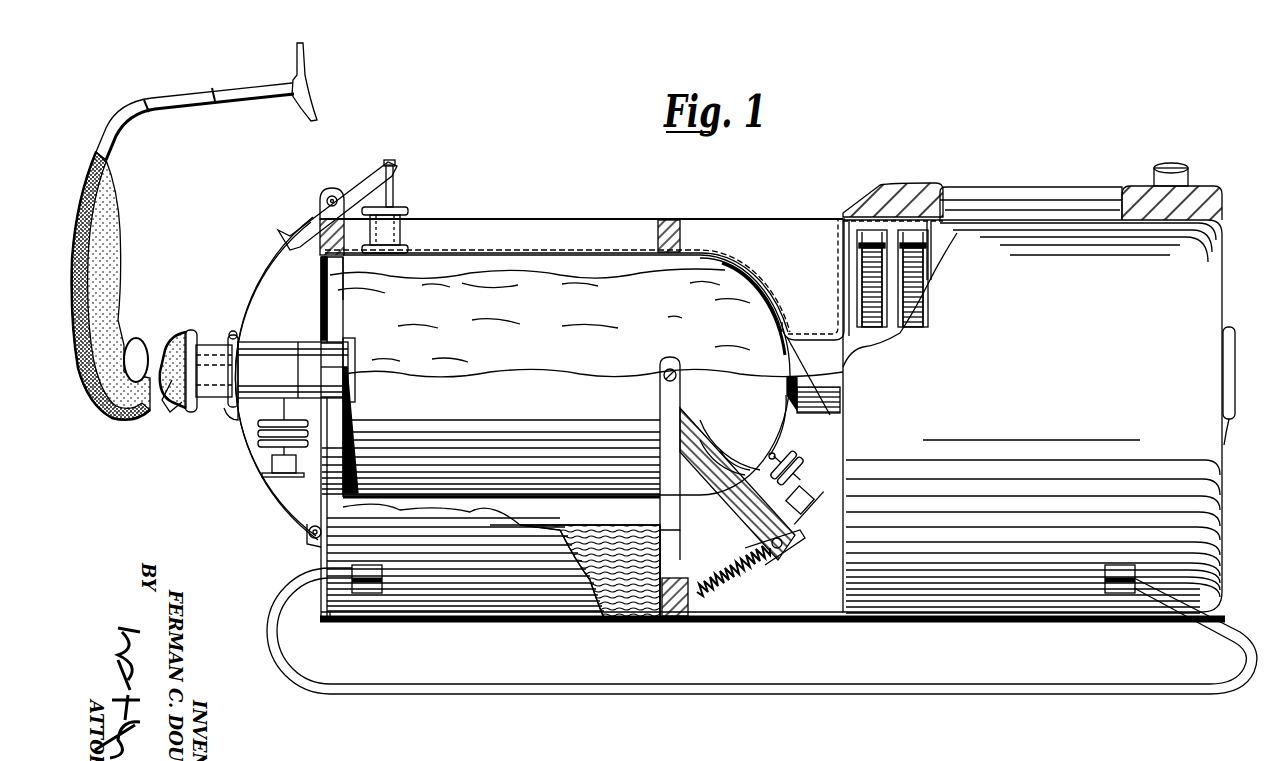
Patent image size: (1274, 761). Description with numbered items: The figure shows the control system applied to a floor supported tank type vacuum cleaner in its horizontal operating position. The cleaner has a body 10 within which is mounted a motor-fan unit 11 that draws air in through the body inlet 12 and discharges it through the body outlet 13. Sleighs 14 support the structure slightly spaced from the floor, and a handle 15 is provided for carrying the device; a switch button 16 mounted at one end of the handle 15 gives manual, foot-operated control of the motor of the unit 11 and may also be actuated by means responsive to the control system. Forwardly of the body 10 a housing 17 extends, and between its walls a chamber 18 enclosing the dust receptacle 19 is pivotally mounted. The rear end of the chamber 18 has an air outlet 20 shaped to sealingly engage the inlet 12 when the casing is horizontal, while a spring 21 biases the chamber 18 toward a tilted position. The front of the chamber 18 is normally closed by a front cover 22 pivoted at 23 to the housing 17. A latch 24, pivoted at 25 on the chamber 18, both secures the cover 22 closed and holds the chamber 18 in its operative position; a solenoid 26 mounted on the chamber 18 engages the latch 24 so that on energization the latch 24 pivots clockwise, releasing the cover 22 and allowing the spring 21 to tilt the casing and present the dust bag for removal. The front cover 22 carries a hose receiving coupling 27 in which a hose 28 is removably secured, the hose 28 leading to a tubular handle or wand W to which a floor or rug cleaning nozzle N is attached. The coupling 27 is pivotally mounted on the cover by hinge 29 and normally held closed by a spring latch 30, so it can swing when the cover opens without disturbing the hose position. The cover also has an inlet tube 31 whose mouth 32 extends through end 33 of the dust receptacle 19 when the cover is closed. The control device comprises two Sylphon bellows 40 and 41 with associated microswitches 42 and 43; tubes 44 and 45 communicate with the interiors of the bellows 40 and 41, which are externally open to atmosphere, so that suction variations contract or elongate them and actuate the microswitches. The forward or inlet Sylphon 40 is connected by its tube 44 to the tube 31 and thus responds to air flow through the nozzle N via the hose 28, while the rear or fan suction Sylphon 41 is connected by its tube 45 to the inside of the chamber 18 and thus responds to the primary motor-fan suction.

The wand W is at (218, 105).
The nozzle N is at (304, 100).
The body 10 is at (1195, 310).
The motor-fan unit 11 is at (902, 240).
The body inlet 12 is at (832, 315).
The body outlet 13 is at (1224, 420).
The sleighs 14 is at (1130, 692).
The handle 15 is at (980, 198).
The switch button 16 is at (1182, 172).
The housing 17 is at (756, 228).
The chamber 18 is at (588, 252).
The dust receptacle 19 is at (490, 266).
The air outlet 20 is at (832, 418).
The spring 21 is at (722, 568).
The front cover 22 is at (278, 498).
The pivot 23 is at (308, 540).
The latch 24 is at (300, 226).
The pivot 25 is at (330, 196).
The solenoid 26 is at (395, 212).
The hose receiving coupling 27 is at (214, 404).
The hose 28 is at (168, 355).
The hinge 29 is at (230, 332).
The spring latch 30 is at (233, 424).
The inlet tube 31 is at (264, 340).
The mouth 32 is at (348, 352).
The end 33 is at (322, 312).
The Sylphon bellows 40 is at (297, 445).
The Sylphon bellows 41 is at (798, 470).
The microswitch 42 is at (290, 476).
The microswitch 43 is at (800, 492).
The tube 44 is at (290, 412).
The tube 45 is at (775, 453).